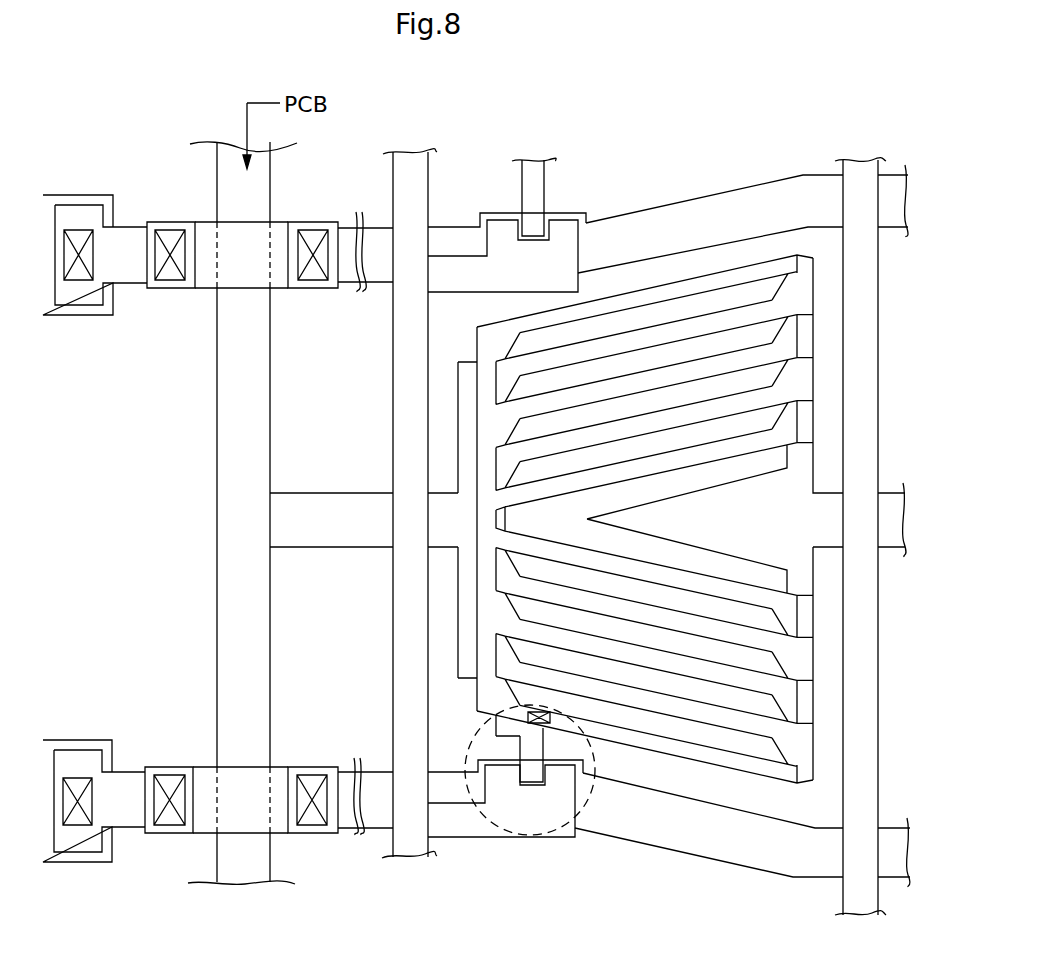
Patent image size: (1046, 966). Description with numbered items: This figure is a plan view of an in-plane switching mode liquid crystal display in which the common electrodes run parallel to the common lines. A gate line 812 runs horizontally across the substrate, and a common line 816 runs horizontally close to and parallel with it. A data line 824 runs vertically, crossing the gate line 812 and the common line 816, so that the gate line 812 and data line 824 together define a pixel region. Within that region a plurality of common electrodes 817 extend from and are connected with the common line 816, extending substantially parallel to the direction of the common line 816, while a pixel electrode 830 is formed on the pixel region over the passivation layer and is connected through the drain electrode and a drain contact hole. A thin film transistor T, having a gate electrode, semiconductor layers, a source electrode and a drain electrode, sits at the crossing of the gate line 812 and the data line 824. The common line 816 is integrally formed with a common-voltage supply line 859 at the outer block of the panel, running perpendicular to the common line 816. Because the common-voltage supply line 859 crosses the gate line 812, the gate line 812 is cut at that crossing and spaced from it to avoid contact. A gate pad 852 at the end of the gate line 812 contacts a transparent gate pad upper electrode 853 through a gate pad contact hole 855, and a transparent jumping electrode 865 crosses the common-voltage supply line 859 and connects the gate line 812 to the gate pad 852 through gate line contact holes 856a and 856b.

The data line 824 is at (420, 160).
The common-voltage supply line 859 is at (225, 519).
The gate pad contact hole 855 is at (80, 232).
The gate line contact hole 856a is at (168, 232).
The gate line contact hole 856b is at (327, 838).
The gate pad 852 is at (93, 297).
The gate pad upper electrode 853 is at (52, 317).
The jumping electrode 865 is at (247, 815).
The gate line 812 is at (343, 780).
The common line 816 is at (336, 492).
The common electrode 817 is at (466, 607).
The pixel electrode 830 is at (483, 345).
The thin film transistor T is at (575, 837).